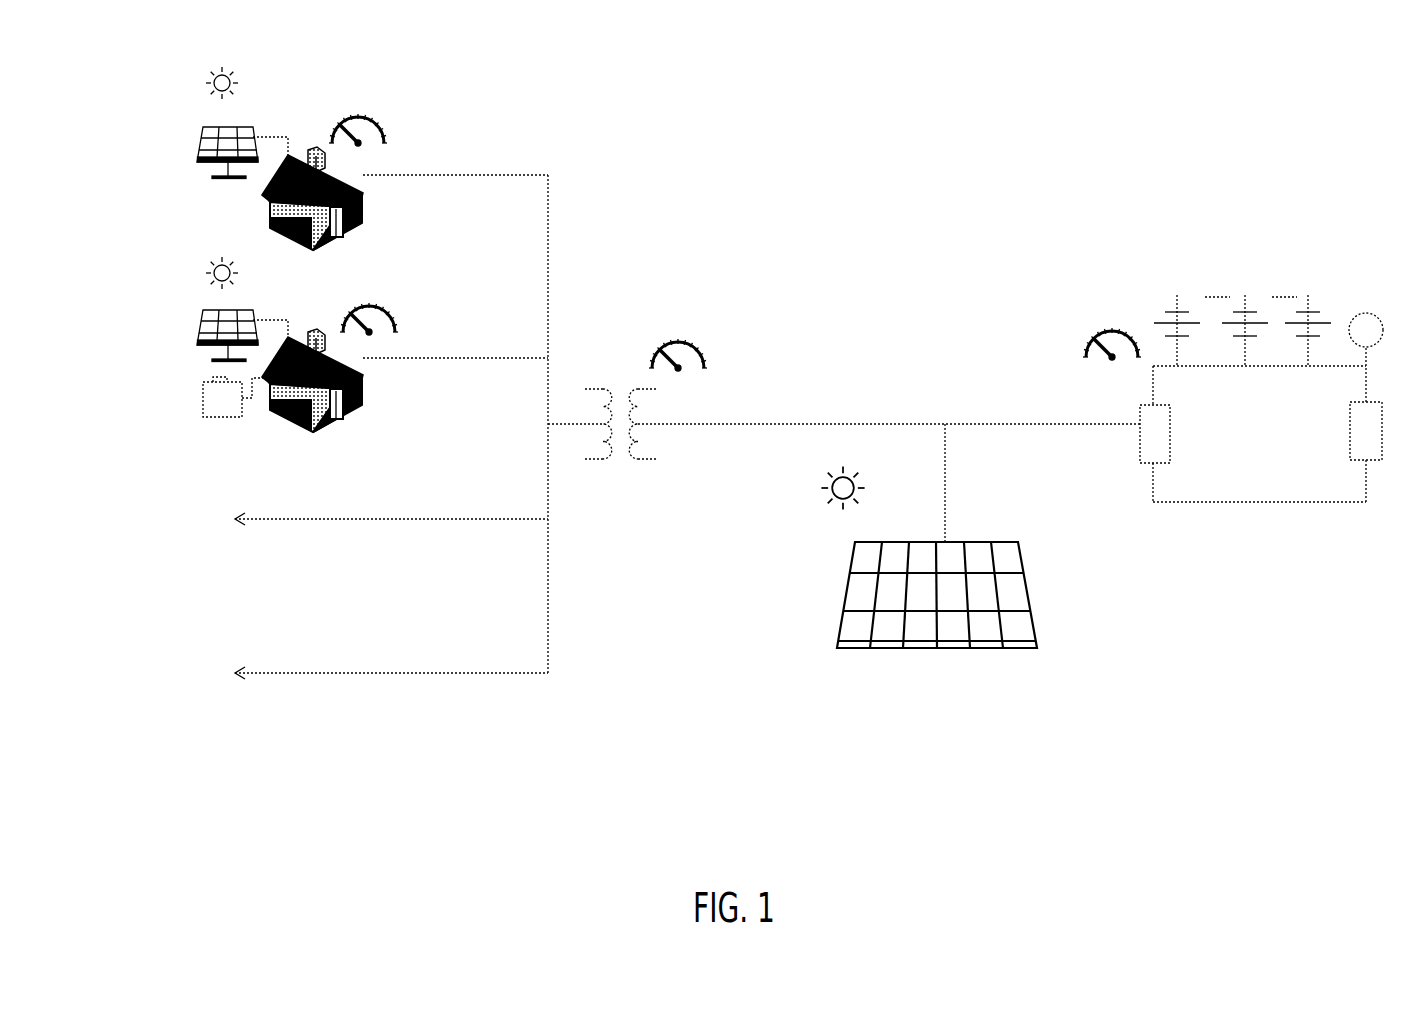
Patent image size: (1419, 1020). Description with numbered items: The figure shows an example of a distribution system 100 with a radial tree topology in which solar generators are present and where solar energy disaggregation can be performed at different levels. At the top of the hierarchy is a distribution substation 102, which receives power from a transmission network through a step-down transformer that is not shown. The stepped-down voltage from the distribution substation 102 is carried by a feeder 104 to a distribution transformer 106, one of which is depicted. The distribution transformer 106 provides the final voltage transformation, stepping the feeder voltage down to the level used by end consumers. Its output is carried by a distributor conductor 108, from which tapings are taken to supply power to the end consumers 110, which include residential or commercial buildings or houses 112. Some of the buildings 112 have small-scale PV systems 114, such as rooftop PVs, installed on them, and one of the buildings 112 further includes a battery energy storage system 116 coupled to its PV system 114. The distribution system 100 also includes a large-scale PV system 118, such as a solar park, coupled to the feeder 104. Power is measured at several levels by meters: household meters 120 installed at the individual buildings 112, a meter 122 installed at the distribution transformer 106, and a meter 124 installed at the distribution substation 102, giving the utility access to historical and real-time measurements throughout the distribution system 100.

The distribution system 100 is at (1208, 103).
The distribution substation 102 is at (1248, 551).
The feeder 104 is at (970, 424).
The distribution transformer 106 is at (617, 496).
The distributor conductor 108 is at (548, 240).
The end consumers 110 is at (166, 140).
The buildings 112 is at (365, 208).
The small-scale PV system 114 is at (199, 166).
The battery energy storage system 116 is at (223, 418).
The large-scale PV system 118 is at (950, 678).
The household meter 120 is at (386, 113).
The distribution transformer meter 122 is at (693, 343).
The substation meter 124 is at (1103, 333).